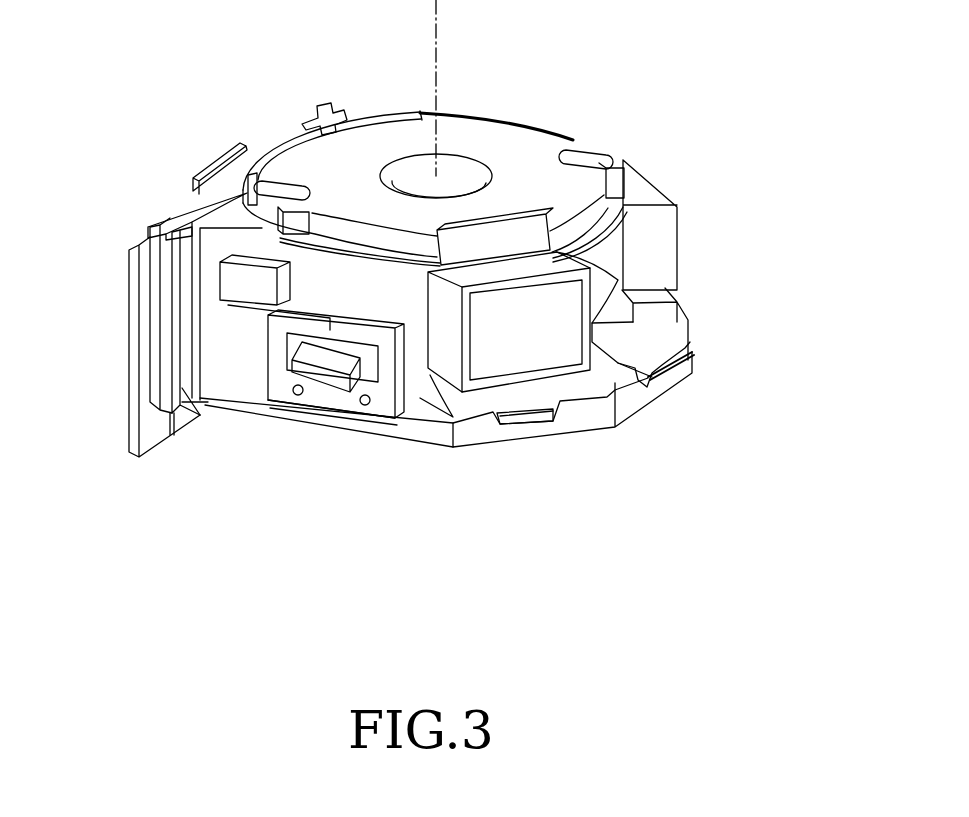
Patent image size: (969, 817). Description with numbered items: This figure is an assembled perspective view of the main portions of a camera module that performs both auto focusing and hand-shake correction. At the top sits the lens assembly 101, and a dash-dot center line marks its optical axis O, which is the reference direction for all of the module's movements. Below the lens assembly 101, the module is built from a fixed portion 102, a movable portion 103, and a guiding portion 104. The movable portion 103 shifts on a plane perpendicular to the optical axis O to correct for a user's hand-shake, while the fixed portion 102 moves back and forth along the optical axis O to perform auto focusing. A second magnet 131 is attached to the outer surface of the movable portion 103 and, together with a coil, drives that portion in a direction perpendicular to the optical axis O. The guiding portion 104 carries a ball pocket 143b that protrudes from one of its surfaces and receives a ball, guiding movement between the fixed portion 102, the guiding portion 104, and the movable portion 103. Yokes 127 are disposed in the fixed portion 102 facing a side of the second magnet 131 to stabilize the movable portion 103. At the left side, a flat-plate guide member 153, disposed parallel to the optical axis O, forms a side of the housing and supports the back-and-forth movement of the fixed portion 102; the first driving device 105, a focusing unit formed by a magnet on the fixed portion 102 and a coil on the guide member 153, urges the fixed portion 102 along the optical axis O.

The optical axis O is at (436, 48).
The lens assembly 101 is at (520, 122).
The fixed portion 102 is at (325, 424).
The movable portion 103 is at (607, 252).
The guiding portion 104 is at (652, 362).
The first driving device 105 is at (132, 271).
The yoke 127 is at (538, 413).
The second magnet 131 is at (560, 353).
The ball pocket 143b is at (513, 410).
The guide member 153 is at (212, 165).